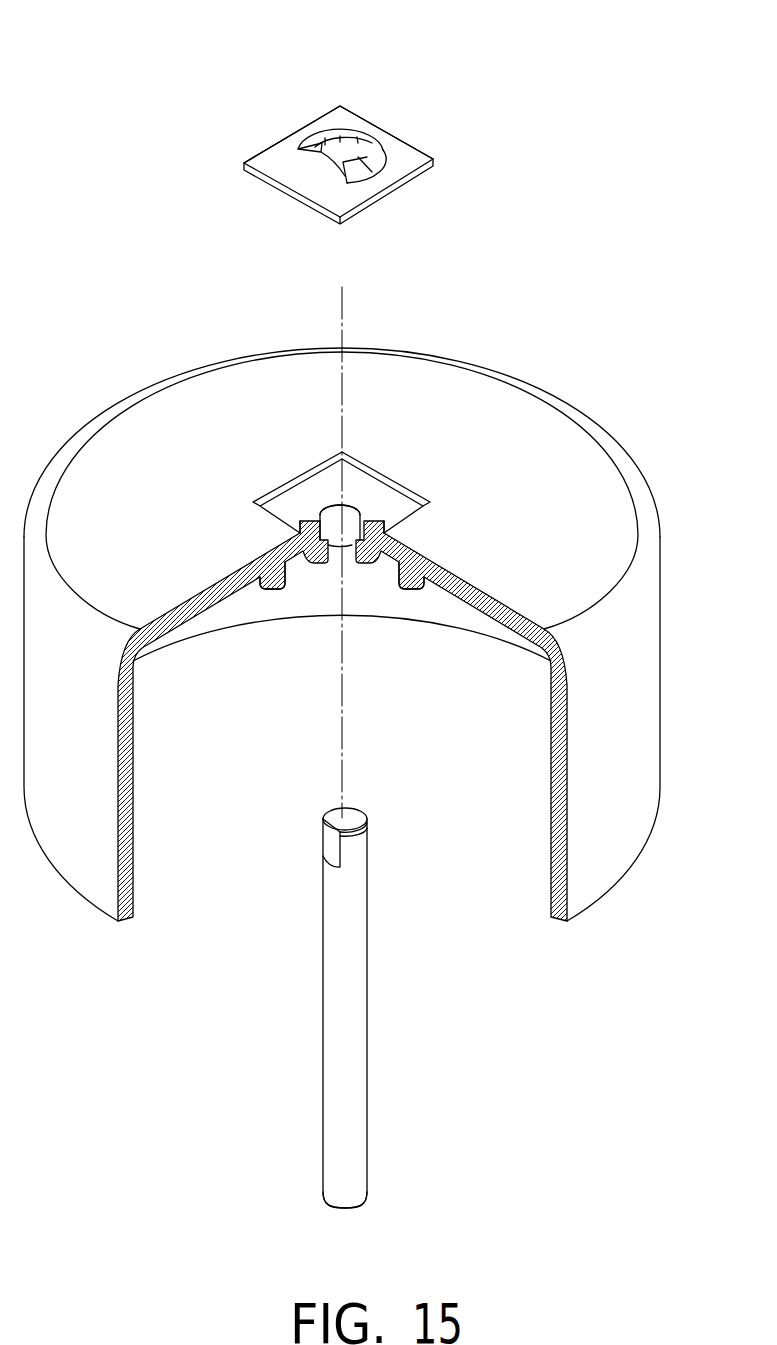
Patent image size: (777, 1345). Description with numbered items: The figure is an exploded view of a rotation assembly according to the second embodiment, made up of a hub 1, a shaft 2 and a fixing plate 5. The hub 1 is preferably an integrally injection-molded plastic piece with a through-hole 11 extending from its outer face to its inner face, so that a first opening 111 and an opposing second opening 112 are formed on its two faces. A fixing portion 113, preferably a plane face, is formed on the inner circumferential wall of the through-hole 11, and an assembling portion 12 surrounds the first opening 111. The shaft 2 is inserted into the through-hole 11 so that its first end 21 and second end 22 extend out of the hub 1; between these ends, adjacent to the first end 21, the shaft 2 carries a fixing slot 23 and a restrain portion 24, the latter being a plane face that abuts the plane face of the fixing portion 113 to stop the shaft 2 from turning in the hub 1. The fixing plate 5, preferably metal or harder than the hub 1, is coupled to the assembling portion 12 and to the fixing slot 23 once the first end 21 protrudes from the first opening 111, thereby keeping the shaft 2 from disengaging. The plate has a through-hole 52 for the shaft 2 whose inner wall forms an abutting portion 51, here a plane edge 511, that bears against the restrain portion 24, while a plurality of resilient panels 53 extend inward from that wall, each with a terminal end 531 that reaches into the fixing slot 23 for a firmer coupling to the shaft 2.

The hub 1 is at (97, 460).
The through-hole 11 is at (330, 510).
The first opening 111 is at (363, 505).
The second opening 112 is at (350, 542).
The fixing portion 113 is at (300, 503).
The assembling portion 12 is at (416, 482).
The shaft 2 is at (357, 1044).
The first end 21 is at (381, 800).
The second end 22 is at (384, 1216).
The fixing slot 23 is at (367, 841).
The restrain portion 24 is at (330, 842).
The fixing plate 5 is at (393, 177).
The abutting portion 51 is at (302, 166).
The plane edge 511 is at (313, 146).
The through-hole 52 is at (335, 145).
The resilient panels 53 is at (365, 155).
The terminal end 531 is at (358, 143).